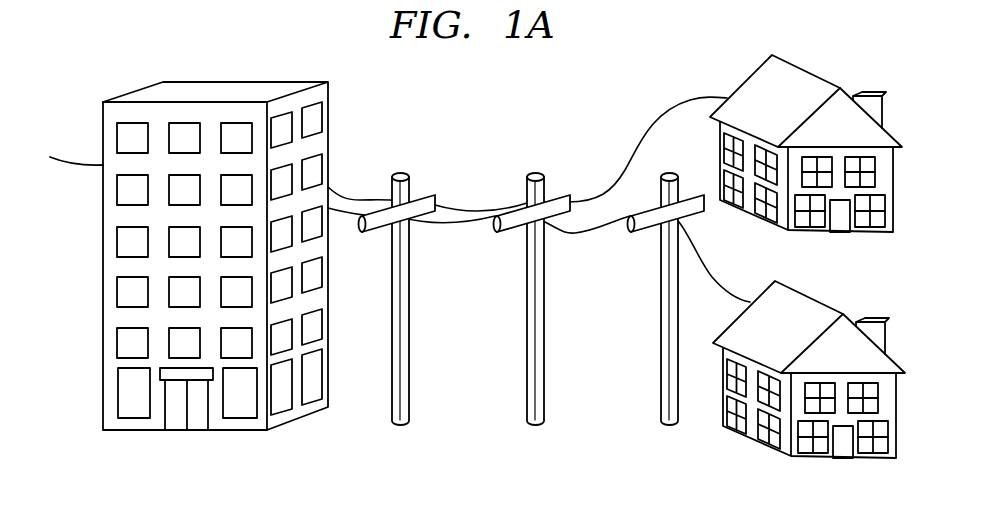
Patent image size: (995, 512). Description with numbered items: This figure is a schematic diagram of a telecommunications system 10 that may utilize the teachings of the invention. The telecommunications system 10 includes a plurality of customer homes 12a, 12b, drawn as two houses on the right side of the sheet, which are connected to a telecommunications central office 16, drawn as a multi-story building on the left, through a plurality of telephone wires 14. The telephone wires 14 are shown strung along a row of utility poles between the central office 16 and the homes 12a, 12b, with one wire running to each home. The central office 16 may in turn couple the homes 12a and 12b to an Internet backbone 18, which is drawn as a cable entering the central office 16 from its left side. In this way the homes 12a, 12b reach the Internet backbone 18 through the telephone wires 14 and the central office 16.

The telecommunications system 10 is at (583, 103).
The customer home 12a is at (807, 67).
The customer home 12b is at (808, 293).
The telephone wires 14 is at (457, 207).
The telecommunications central office 16 is at (205, 88).
The Internet backbone 18 is at (82, 163).